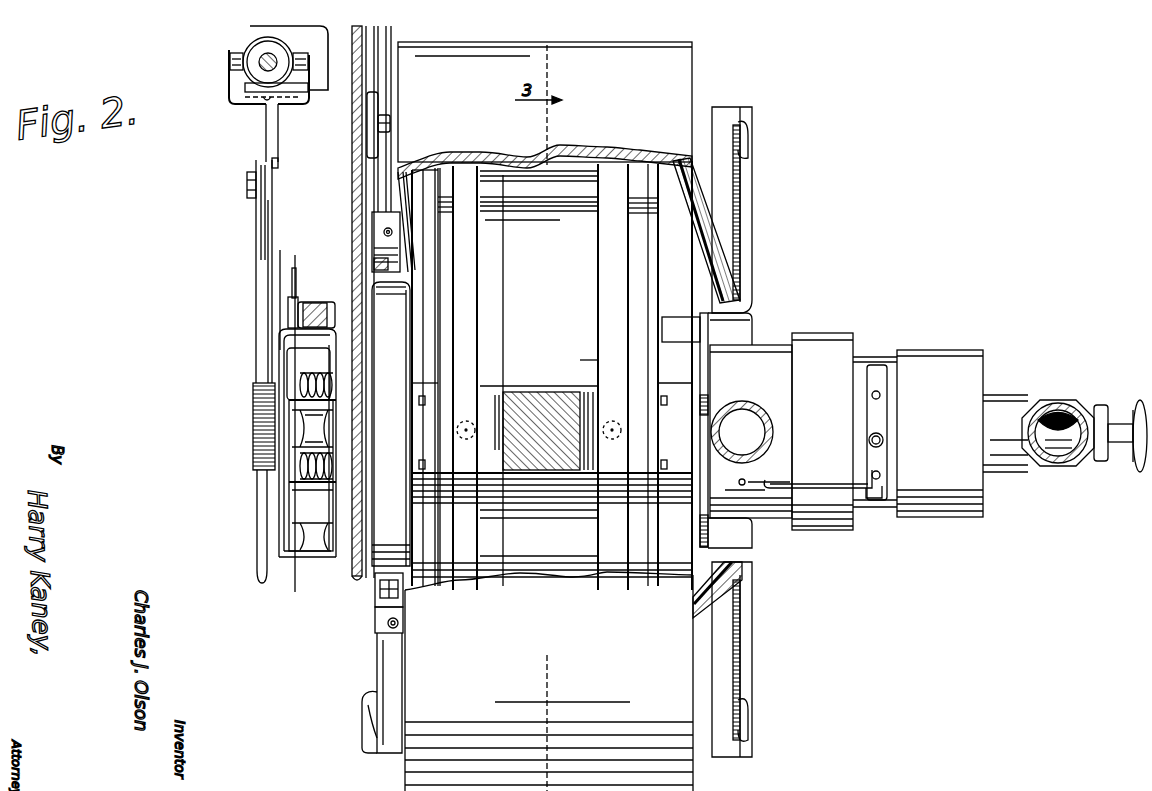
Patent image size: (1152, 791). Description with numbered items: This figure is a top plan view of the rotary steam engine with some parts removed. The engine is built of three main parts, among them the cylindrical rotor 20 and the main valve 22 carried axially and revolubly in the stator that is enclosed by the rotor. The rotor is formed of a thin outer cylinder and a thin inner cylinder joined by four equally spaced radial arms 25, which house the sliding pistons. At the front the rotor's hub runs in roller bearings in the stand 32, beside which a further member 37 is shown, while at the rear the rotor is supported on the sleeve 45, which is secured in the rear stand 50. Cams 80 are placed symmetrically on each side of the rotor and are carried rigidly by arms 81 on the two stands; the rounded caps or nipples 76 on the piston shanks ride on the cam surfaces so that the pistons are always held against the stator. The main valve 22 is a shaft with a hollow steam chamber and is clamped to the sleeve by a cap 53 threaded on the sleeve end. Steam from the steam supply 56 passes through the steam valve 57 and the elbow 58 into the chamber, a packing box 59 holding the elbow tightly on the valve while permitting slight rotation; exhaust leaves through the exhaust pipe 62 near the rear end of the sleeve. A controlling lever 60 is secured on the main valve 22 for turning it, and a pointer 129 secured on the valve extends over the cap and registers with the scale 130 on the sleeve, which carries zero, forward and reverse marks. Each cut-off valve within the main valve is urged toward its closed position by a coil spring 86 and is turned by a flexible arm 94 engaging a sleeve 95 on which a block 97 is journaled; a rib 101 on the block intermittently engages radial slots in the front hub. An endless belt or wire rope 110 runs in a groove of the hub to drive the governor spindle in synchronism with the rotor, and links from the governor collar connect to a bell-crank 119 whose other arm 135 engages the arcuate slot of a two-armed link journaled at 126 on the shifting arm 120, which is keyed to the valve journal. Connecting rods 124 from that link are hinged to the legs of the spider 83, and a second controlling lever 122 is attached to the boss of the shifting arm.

The cylindrical rotor 20 is at (694, 78).
The main valve 22 is at (872, 365).
The radial arms 25 is at (536, 395).
The stand 32 is at (378, 664).
The lever column 37 is at (391, 424).
The sleeve 45 is at (790, 522).
The rear stand 50 is at (728, 660).
The cap 53 is at (818, 333).
The steam supply 56 is at (1054, 468).
The steam valve 57 is at (1104, 462).
The shaft 58 is at (1005, 395).
The packing box 59 is at (958, 350).
The controlling lever 60 is at (884, 440).
The exhaust pipe 62 is at (762, 405).
The cap or nipple 76 is at (466, 420).
The cams 80 is at (465, 292).
The arms 81 is at (412, 243).
The spider 83 is at (277, 515).
The coil spring 86 is at (310, 413).
The flexible arm 94 is at (306, 270).
The sleeve 95 is at (292, 305).
The block 97 is at (333, 302).
The rib 101 is at (328, 402).
The endless belt or wire rope 110 is at (353, 138).
The bell-crank 119 is at (238, 110).
The shifting arm 120 is at (256, 255).
The second controlling lever 122 is at (255, 545).
The connecting rods 124 is at (273, 220).
The journal of two-armed link 126 is at (247, 184).
The link rod 129 is at (863, 503).
The scale 130 is at (775, 500).
The arm of bell-crank 135 is at (279, 130).